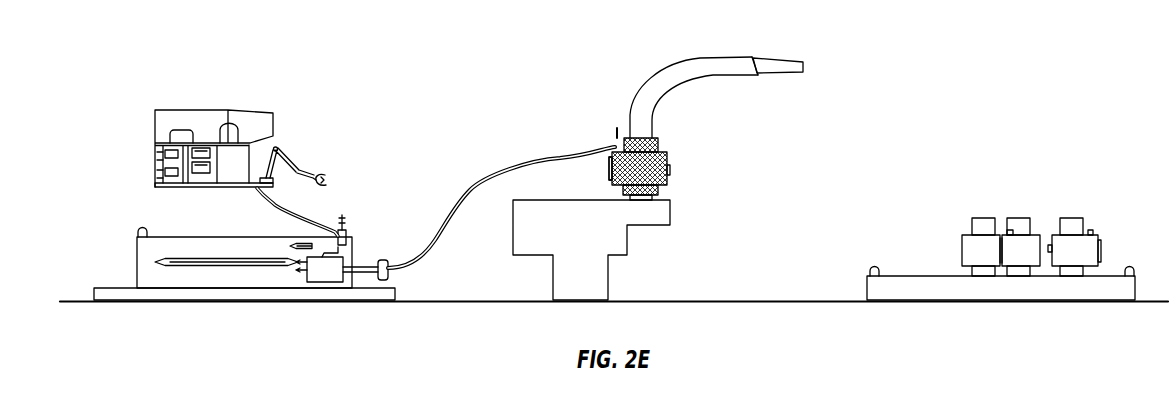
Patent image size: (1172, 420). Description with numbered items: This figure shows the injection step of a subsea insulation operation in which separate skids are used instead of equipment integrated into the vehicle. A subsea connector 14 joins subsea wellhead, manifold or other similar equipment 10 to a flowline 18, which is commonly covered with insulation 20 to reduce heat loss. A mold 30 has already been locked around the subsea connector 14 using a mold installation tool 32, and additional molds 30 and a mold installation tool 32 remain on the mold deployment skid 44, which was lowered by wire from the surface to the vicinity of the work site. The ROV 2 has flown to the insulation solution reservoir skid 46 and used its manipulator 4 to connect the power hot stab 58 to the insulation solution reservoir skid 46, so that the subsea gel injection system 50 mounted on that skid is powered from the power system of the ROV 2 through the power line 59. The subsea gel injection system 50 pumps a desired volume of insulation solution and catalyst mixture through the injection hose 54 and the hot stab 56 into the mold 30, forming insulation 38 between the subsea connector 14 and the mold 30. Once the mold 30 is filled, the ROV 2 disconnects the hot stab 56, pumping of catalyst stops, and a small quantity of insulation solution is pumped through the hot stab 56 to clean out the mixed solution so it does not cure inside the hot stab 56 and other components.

The ROV 2 is at (175, 110).
The manipulator 4 is at (290, 162).
The subsea wellhead, manifold or other similar equipment 10 is at (630, 238).
The subsea connector 14 is at (670, 177).
The flowline 18 is at (787, 57).
The insulation 20 is at (718, 55).
The mold 30 is at (664, 129).
The mold installation tool 32 is at (667, 155).
The insulation 38 is at (610, 162).
The mold deployment skid 44 is at (897, 275).
The insulation solution reservoir skid 46 is at (110, 288).
The subsea gel injection system 50 is at (160, 237).
The injection hose 54 is at (432, 237).
The hot stab 56 is at (618, 138).
The power hot stab 58 is at (345, 217).
The power line 59 is at (270, 200).